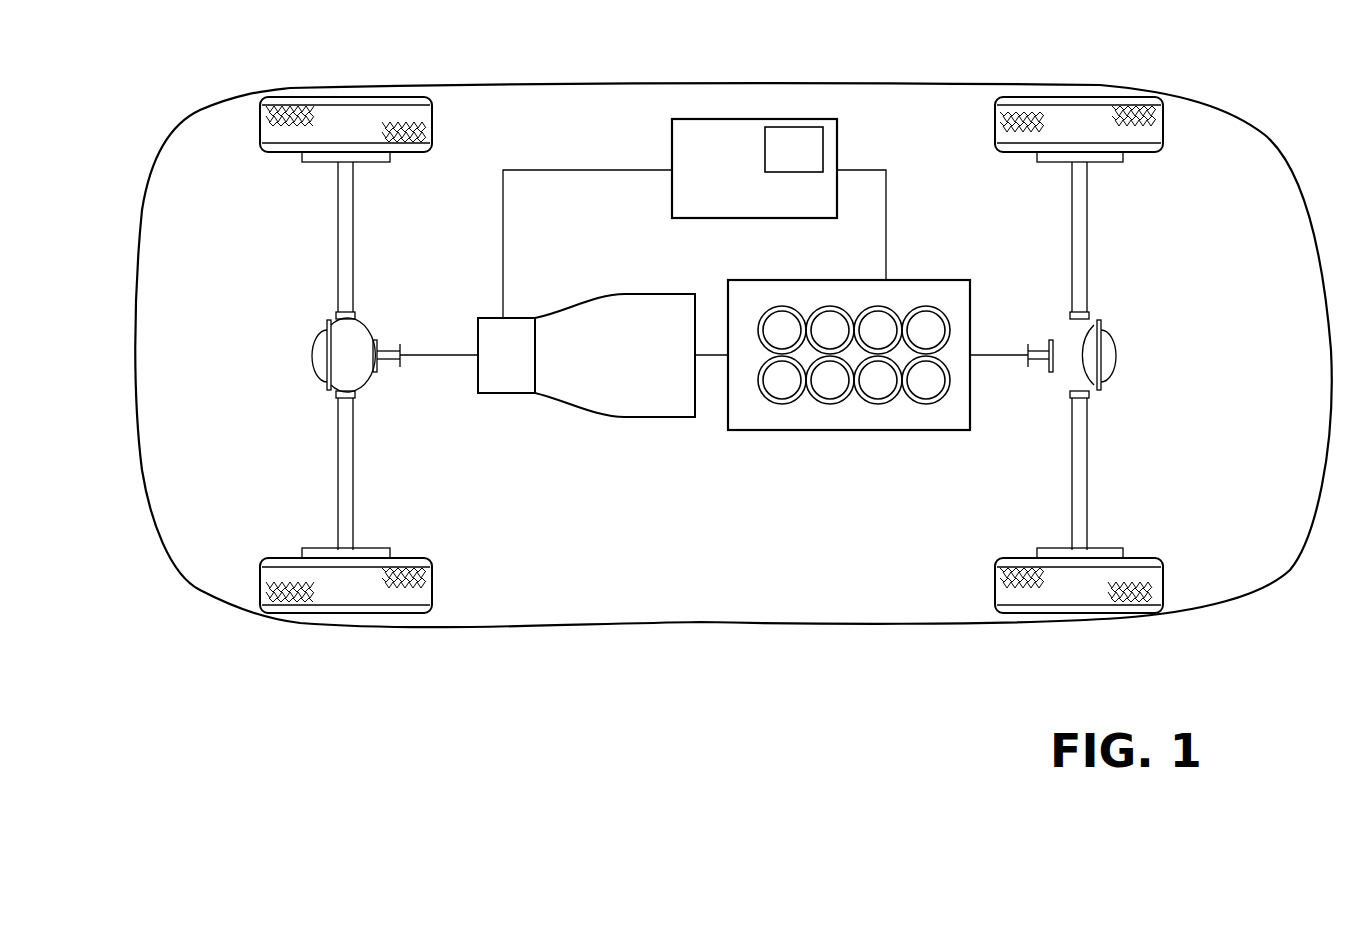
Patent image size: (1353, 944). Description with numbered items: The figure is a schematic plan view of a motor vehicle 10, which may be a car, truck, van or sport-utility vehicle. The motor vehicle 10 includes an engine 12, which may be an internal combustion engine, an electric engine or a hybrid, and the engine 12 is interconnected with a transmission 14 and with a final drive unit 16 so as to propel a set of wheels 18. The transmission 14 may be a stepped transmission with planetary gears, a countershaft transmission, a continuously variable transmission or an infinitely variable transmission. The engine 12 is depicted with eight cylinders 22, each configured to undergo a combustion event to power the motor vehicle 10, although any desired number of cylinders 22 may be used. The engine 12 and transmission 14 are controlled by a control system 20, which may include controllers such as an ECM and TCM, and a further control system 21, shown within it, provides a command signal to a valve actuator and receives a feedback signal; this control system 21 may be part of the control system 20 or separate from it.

The motor vehicle 10 is at (740, 635).
The engine 12 is at (849, 411).
The transmission 14 is at (603, 355).
The final drive unit 16 is at (302, 333).
The wheels 18 is at (355, 110).
The control system 20 is at (694, 218).
The control system 21 is at (794, 149).
The cylinders 22 is at (893, 405).